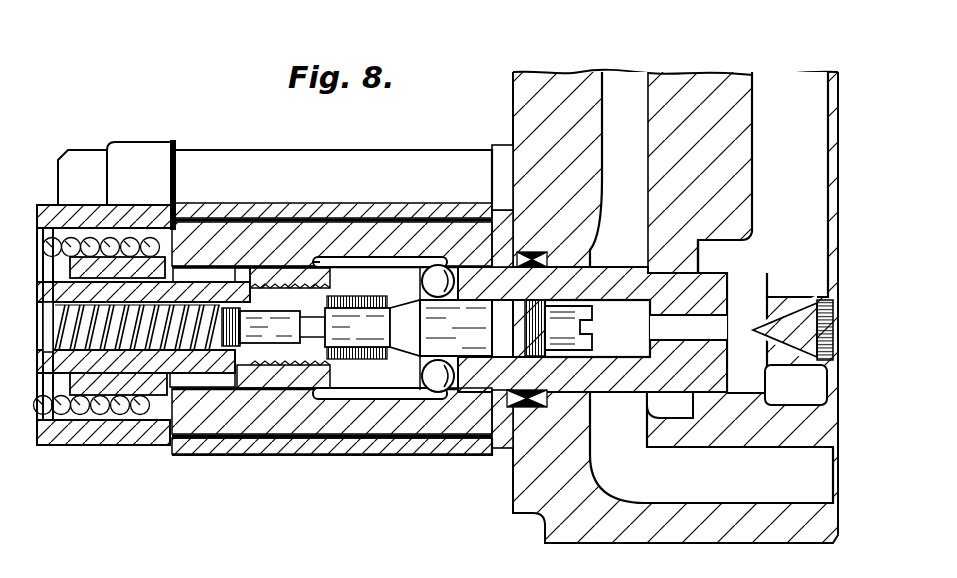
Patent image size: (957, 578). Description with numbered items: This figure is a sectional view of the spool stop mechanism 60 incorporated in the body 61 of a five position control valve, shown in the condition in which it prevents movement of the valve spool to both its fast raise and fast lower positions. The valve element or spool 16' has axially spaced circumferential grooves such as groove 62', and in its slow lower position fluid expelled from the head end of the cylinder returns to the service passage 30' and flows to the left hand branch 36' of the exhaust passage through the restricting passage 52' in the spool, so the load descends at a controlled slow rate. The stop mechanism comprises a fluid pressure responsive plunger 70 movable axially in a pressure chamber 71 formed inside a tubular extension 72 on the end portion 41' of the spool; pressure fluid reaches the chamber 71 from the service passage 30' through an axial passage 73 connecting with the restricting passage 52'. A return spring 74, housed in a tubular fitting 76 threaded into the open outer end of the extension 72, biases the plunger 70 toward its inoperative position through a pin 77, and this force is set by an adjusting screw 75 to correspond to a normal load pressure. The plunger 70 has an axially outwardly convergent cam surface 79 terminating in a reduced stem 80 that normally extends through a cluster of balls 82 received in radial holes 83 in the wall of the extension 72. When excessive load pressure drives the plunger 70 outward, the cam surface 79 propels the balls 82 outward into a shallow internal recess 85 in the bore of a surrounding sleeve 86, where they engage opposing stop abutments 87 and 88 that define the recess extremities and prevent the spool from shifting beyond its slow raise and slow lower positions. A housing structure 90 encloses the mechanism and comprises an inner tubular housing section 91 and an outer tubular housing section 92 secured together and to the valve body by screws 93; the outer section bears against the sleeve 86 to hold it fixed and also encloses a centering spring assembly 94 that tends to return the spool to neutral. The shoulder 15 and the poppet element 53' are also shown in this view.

The shoulder of passage 15 is at (713, 263).
The valve element or spool 16' is at (795, 269).
The service passage 30' is at (763, 216).
The left hand branch of the exhaust passage 36' is at (619, 150).
The end portion of the valve spool 41' is at (711, 447).
The restricting passage 52' is at (728, 437).
The poppet valve 53' is at (789, 388).
The stop mechanism 60 is at (399, 146).
The body 61 is at (520, 86).
The groove 62' is at (796, 385).
The plunger 70 is at (470, 320).
The pressure chamber 71 is at (632, 362).
The tubular extension 72 is at (258, 273).
The axial passage 73 is at (670, 330).
The return spring 74 is at (127, 335).
The adjusting screw 75 is at (50, 207).
The tubular fitting 76 is at (192, 292).
The pin 77 is at (280, 330).
The cam surface 79 is at (407, 340).
The reduced stem 80 is at (357, 333).
The balls 82 is at (433, 268).
The radial holes 83 is at (410, 277).
The internal recess 85 is at (342, 261).
The sleeve 86 is at (217, 228).
The stop abutment 87 is at (317, 262).
The stop abutment 88 is at (457, 262).
The housing structure 90 is at (204, 133).
The inner tubular housing section 91 is at (215, 447).
The outer tubular housing section 92 is at (90, 442).
The screws 93 is at (78, 162).
The centering spring assembly 94 is at (140, 231).